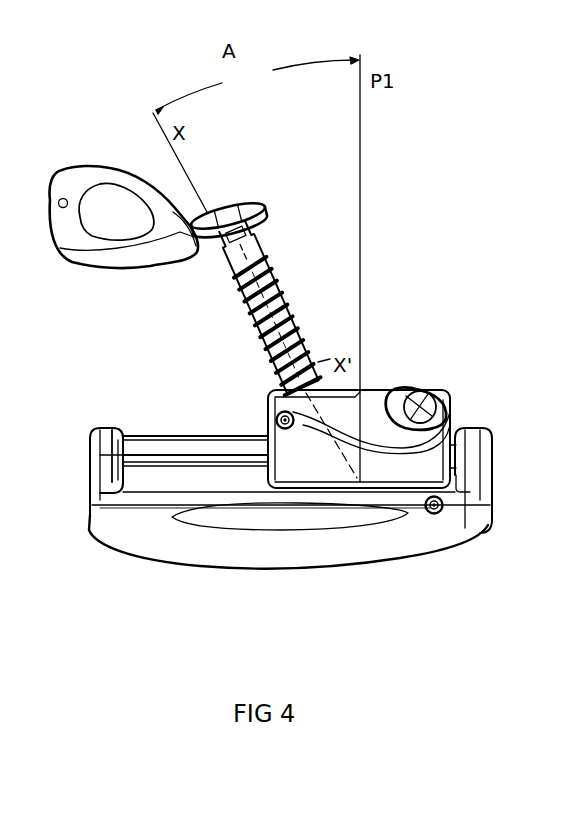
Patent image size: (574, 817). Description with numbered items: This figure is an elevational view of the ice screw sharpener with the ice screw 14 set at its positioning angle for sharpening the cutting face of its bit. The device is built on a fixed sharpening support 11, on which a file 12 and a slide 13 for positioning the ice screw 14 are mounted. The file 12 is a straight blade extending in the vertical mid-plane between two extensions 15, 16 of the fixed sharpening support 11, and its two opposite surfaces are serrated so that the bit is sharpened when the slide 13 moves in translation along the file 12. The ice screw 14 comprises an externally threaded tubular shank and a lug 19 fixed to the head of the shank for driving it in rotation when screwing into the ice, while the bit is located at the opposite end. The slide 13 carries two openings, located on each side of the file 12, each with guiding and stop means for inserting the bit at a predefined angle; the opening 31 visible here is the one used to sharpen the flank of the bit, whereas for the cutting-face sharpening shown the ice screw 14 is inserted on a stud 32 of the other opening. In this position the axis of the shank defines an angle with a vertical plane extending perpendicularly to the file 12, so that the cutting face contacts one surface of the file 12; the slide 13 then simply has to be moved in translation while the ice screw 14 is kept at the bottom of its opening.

The fixed sharpening support 11 is at (289, 543).
The file 12 is at (289, 431).
The slide 13 is at (433, 430).
The ice screw 14 is at (219, 296).
The extension 15 is at (101, 470).
The extension 16 is at (473, 472).
The lug 19 is at (124, 237).
The opening 31 is at (435, 407).
The stud 32 is at (402, 379).